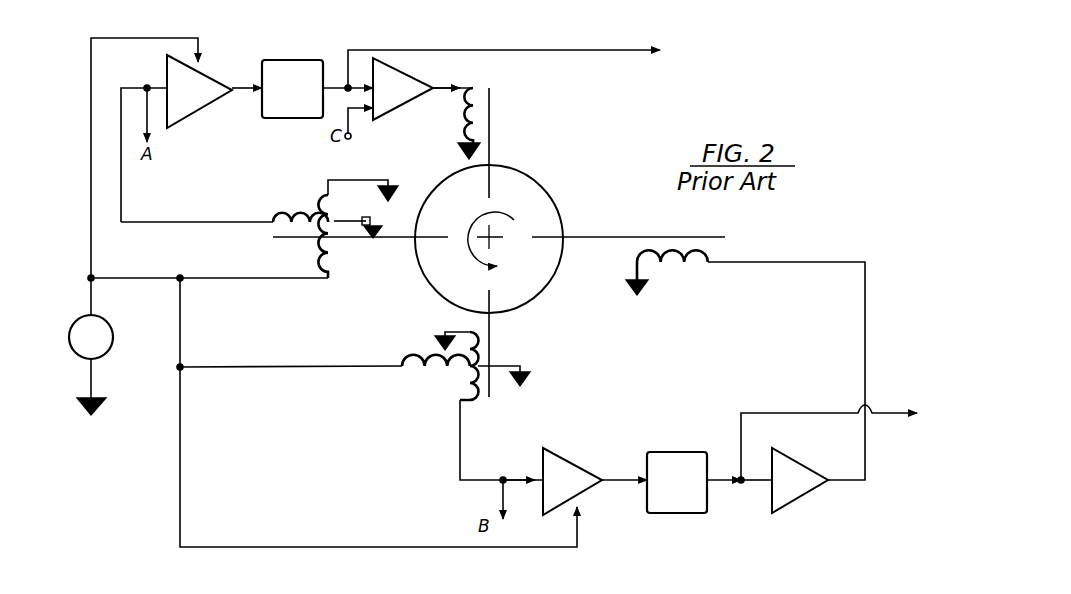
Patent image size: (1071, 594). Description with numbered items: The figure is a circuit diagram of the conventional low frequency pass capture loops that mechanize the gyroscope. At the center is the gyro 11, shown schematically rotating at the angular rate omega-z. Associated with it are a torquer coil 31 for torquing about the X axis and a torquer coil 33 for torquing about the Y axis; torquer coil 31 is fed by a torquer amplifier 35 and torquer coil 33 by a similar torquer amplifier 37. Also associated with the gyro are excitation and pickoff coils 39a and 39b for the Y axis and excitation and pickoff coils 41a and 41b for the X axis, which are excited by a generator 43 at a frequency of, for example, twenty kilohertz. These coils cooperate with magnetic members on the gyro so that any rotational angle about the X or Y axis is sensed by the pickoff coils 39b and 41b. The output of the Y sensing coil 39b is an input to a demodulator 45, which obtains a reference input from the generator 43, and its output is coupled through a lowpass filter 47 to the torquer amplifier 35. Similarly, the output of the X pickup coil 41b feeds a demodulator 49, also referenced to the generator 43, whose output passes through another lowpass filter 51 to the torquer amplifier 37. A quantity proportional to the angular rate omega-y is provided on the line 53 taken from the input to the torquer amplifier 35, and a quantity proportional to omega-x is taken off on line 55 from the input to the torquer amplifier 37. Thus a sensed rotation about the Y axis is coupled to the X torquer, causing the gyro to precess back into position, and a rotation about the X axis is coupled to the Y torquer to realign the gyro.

The gyro 11 is at (550, 197).
The torquer coil 31 is at (483, 88).
The torquer coil 33 is at (637, 262).
The torquer amplifier 35 is at (402, 113).
The torquer amplifier 37 is at (803, 500).
The excitation coil 39a is at (318, 194).
The pickoff coil 39b is at (337, 225).
The excitation coil 41a is at (448, 350).
The pickoff coil 41b is at (475, 398).
The generator 43 is at (77, 318).
The demodulator 45 is at (215, 78).
The lowpass filter 47 is at (297, 60).
The demodulator 49 is at (565, 457).
The lowpass filter 51 is at (685, 452).
The line 53 is at (513, 50).
The line 55 is at (810, 413).